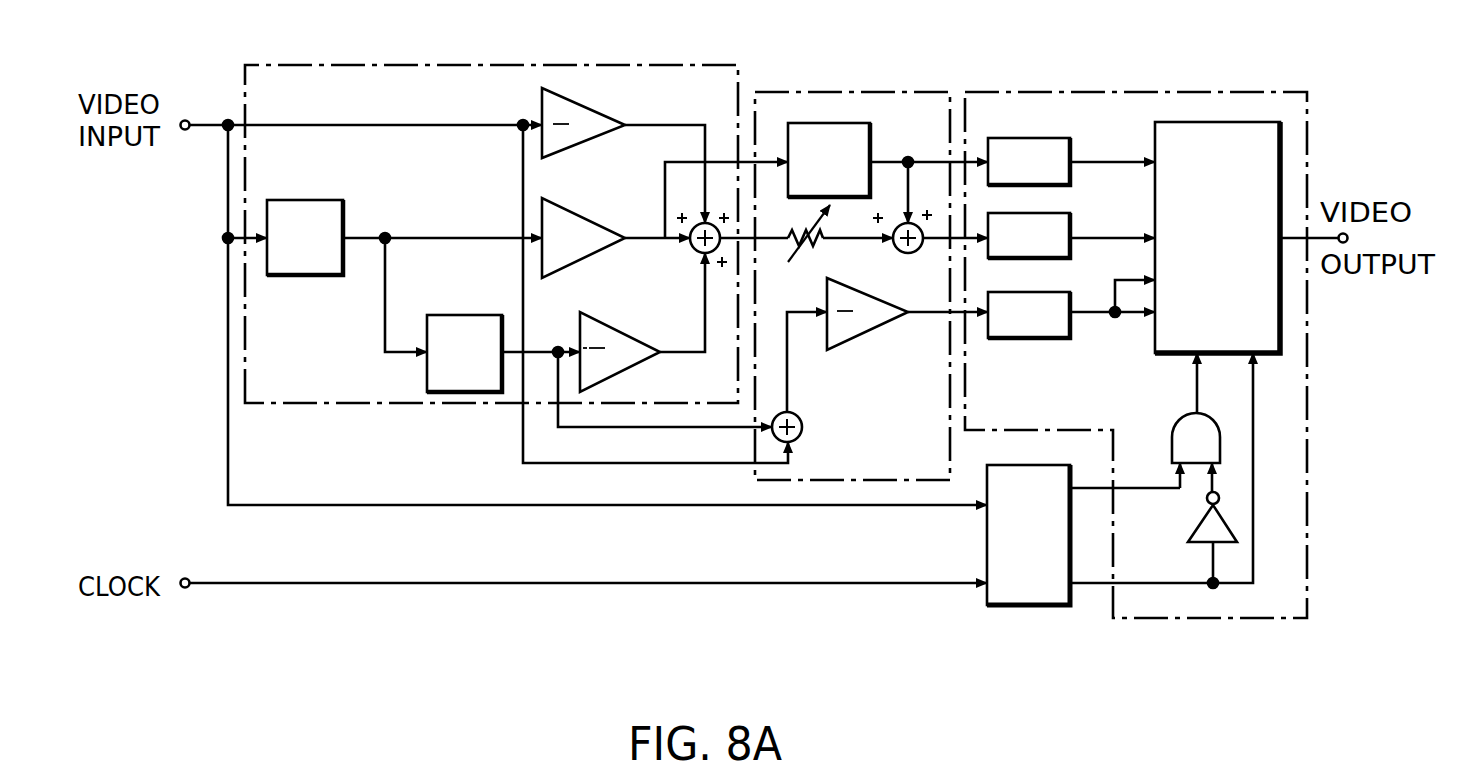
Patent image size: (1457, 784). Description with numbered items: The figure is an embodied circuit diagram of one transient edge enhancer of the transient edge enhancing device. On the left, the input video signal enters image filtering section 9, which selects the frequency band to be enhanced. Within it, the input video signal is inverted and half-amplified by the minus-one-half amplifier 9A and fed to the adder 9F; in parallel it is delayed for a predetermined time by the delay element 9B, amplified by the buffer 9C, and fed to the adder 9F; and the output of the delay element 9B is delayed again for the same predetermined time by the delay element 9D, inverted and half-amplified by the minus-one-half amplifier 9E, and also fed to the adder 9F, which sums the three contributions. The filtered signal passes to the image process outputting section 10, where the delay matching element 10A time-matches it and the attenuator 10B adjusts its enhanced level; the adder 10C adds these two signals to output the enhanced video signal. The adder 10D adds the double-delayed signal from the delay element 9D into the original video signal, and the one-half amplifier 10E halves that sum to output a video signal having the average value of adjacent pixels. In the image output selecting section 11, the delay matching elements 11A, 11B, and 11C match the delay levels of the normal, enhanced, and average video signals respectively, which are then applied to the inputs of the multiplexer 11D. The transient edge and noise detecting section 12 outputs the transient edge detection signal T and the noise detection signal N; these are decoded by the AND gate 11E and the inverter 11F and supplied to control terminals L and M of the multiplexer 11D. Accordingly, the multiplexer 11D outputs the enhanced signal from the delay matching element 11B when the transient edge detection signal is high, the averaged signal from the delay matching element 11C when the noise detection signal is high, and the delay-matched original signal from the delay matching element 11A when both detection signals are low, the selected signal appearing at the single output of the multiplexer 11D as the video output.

The image filtering section 9 is at (445, 65).
The -1/2 amplifier 9A is at (600, 108).
The delay element 9B is at (318, 200).
The buffer 9C is at (585, 200).
The delay element 9D is at (457, 315).
The -1/2 amplifier 9E is at (617, 325).
The adder 9F is at (692, 250).
The image process outputting section 10 is at (890, 92).
The delay matching element 10A is at (858, 123).
The attenuator 10B is at (823, 242).
The adder 10C is at (911, 251).
The adder 10D is at (817, 429).
The 1/2 amplifier 10E is at (880, 328).
The image output selecting section 11 is at (1077, 92).
The delay matching element 11A is at (1043, 138).
The delay matching element 11B is at (1048, 213).
The delay matching element 11C is at (1050, 292).
The multiplexer 11D is at (1153, 340).
The AND gate 11E is at (1172, 430).
The inverter 11F is at (1188, 525).
The transient edge and noise detecting section 12 is at (1020, 605).